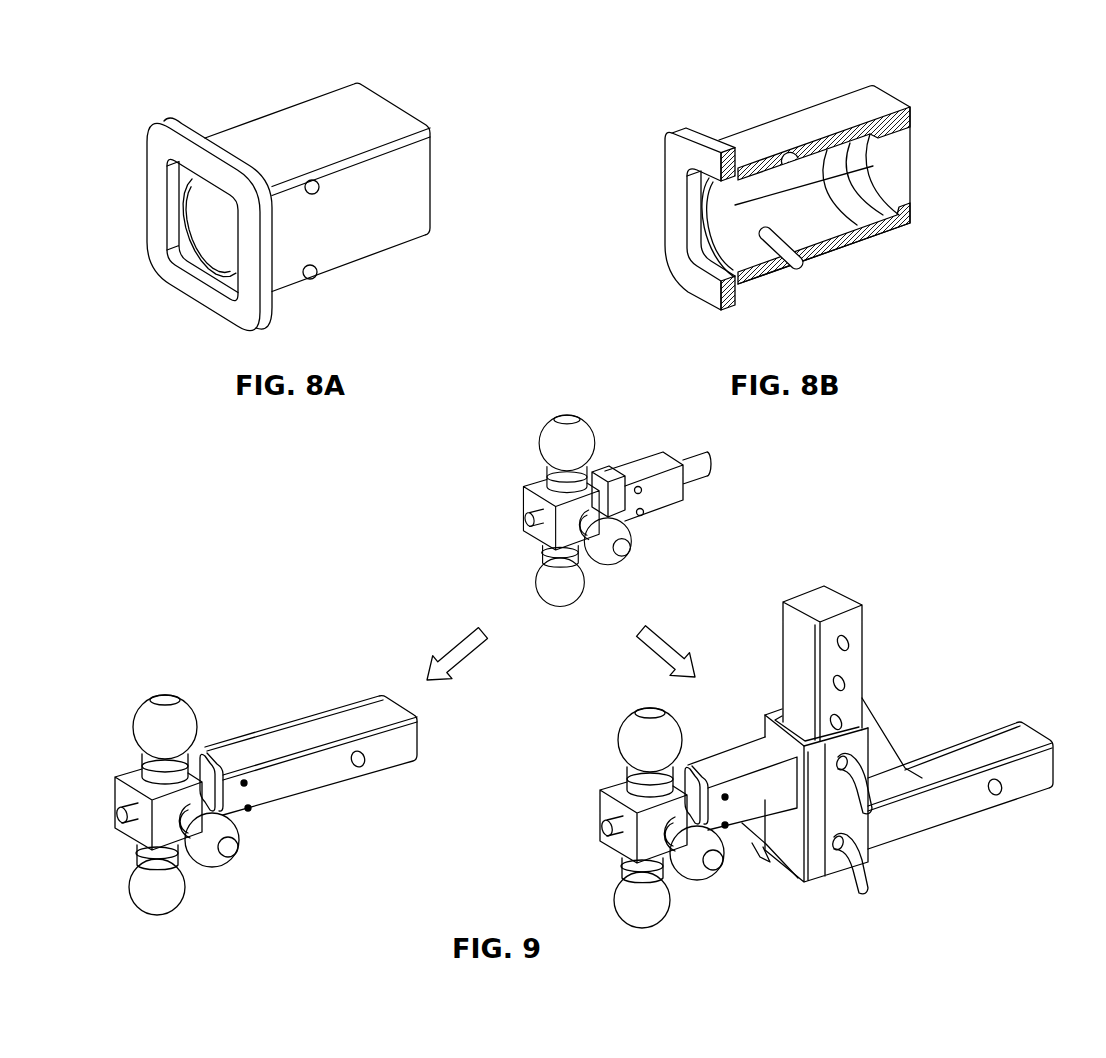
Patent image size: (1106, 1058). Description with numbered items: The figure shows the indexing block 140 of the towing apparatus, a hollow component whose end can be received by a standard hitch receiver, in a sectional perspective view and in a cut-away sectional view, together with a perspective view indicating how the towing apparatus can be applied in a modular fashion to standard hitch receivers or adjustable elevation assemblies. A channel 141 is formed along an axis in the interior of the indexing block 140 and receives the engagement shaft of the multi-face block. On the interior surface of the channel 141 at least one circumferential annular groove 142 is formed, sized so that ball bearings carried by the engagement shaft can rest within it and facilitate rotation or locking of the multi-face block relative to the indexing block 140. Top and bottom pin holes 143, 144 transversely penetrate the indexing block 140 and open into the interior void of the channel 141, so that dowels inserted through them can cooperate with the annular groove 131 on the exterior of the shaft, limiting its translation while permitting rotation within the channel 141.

In FIG. 8A, the indexing block 140 is at (150, 86).
In FIG. 8B, the indexing block 140 is at (676, 104).
In FIG. 8A, the channel 141 is at (222, 240).
In FIG. 8B, the channel 141 is at (927, 160).
In FIG. 8B, the annular groove 142 is at (904, 226).
In FIG. 8A, the top pin hole 143 is at (318, 183).
In FIG. 8A, the bottom pin hole 144 is at (318, 274).
In FIG. 8B, the annular groove 131 is at (796, 266).